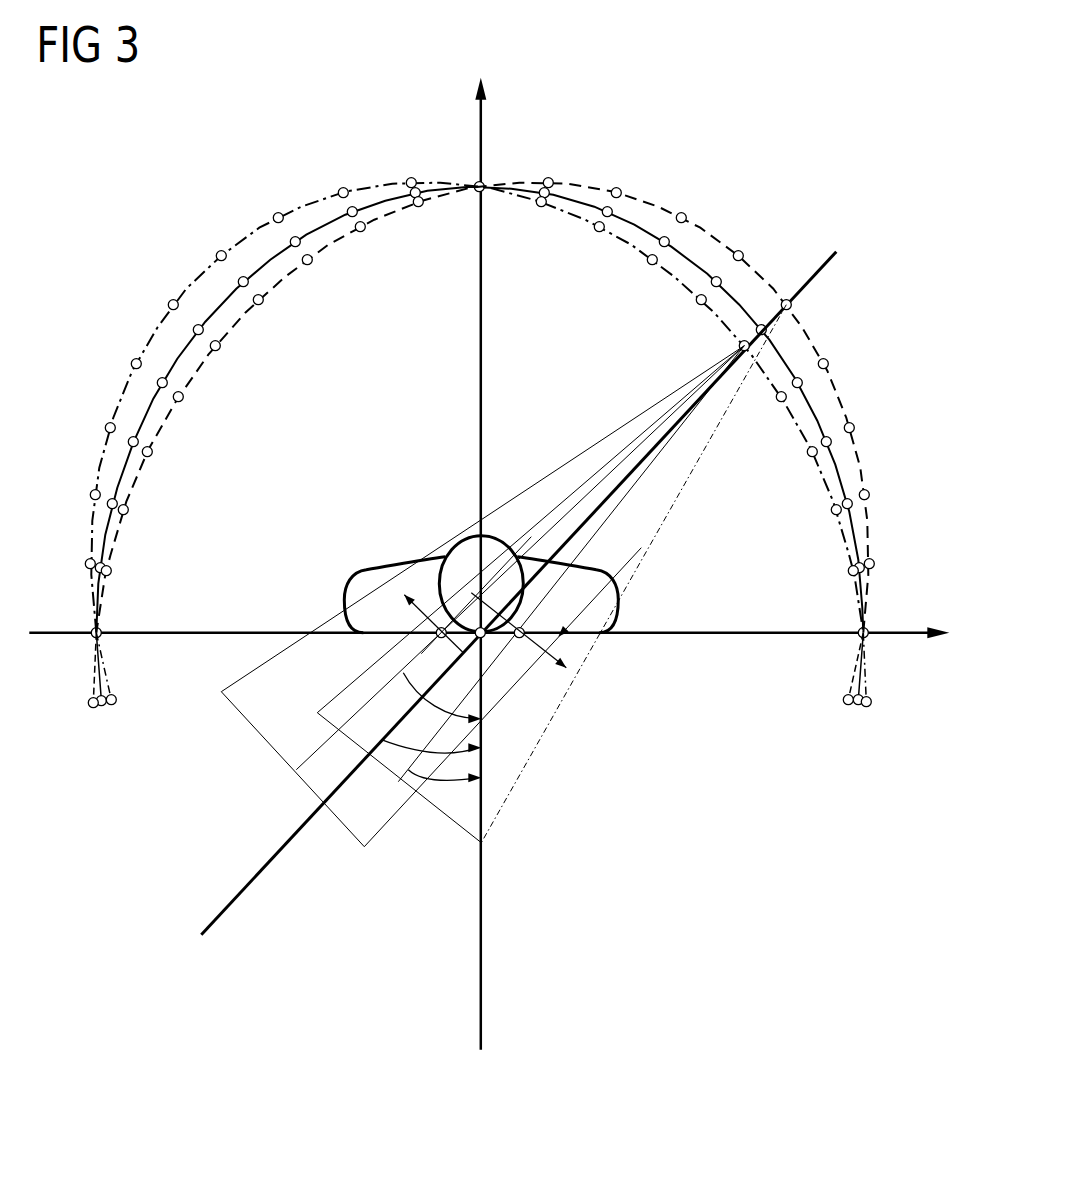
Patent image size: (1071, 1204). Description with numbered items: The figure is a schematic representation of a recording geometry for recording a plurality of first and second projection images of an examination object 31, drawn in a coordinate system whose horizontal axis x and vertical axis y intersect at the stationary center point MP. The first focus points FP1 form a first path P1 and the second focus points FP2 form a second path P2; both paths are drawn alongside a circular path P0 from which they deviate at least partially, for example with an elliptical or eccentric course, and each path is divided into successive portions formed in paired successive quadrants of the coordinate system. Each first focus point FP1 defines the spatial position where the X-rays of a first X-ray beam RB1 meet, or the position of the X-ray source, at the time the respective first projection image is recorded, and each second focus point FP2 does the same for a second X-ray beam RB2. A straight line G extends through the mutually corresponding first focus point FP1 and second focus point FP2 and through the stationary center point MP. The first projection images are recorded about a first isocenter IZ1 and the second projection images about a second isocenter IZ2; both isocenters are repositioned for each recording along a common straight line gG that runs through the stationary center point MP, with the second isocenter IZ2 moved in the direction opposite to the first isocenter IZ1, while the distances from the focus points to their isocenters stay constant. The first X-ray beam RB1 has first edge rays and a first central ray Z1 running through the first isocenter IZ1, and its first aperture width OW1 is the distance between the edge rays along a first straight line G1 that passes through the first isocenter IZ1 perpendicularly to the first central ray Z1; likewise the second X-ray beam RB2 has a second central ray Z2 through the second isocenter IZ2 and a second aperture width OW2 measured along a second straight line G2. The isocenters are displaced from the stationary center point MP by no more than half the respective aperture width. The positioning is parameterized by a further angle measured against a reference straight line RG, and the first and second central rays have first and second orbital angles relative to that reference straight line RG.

The circular path P0 is at (688, 254).
The first path P1 is at (568, 214).
The second path P2 is at (763, 270).
The straight line G is at (838, 258).
The first focus point FP1 is at (746, 354).
The second focus point FP2 is at (792, 308).
The first X-ray beam RB1 is at (638, 420).
The second X-ray beam RB2 is at (668, 500).
The examination object 31 is at (334, 578).
The first aperture width OW1 is at (418, 604).
The second aperture width OW2 is at (548, 648).
The first straight line G1 is at (392, 604).
The second straight line G2 is at (560, 634).
The first isocenter IZ1 is at (438, 640).
The second isocenter IZ2 is at (520, 640).
The stationary center point MP is at (484, 650).
The common straight line gG is at (750, 636).
The reference straight line RG is at (488, 1005).
The first central ray Z1 is at (308, 757).
The second central ray Z2 is at (398, 784).
The x axis x is at (936, 610).
The y axis y is at (500, 90).